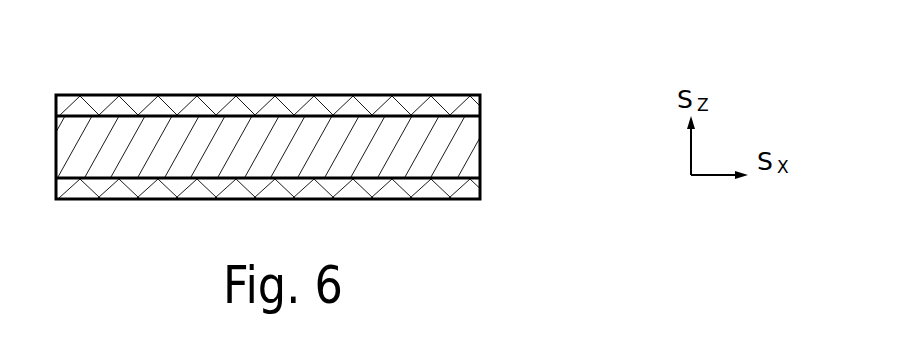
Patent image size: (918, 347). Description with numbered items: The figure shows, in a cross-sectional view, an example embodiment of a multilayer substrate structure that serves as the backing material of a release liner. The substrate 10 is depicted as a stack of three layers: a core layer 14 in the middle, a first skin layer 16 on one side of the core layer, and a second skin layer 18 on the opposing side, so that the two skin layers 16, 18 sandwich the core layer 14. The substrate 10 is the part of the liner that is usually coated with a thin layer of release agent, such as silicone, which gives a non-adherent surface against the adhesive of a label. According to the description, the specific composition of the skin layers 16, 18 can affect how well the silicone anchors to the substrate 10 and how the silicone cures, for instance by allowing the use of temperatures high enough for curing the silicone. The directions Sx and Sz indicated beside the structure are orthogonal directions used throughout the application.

The substrate 10 is at (214, 76).
The first skin layer 16 is at (480, 108).
The core layer 14 is at (480, 147).
The second skin layer 18 is at (480, 183).